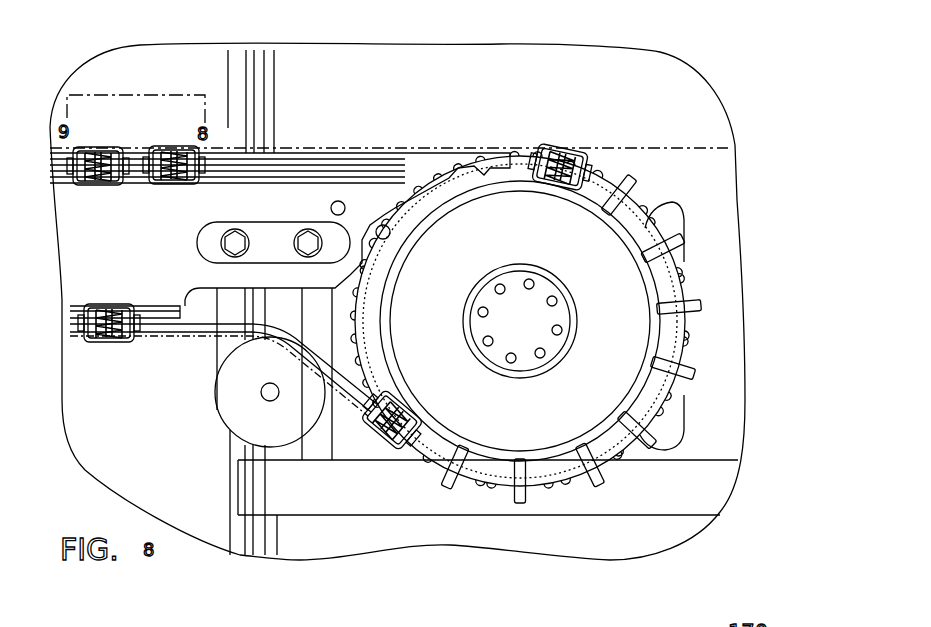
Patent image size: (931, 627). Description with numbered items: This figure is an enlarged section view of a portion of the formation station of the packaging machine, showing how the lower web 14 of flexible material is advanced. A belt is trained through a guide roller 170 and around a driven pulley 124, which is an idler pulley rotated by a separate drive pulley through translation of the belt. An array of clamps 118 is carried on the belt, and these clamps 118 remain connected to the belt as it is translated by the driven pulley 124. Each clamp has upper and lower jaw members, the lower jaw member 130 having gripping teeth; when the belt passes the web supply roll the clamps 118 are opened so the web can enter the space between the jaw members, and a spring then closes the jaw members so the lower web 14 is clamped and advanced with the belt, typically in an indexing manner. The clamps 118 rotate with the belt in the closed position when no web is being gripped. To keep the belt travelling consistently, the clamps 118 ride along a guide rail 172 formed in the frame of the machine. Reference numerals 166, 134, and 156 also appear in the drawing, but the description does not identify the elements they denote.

The lower web 14 is at (447, 150).
The clamps 118 is at (556, 147).
The driven pulley 124 is at (620, 303).
The drive belt 166 is at (180, 340).
The guide roller 170 is at (233, 422).
The guide rail 172 is at (222, 178).
The numeral (partial, adjacent sheet) 134 is at (394, 616).
The lower jaw member 130 is at (287, 616).
The numeral (partial, adjacent sheet) 156 is at (680, 615).